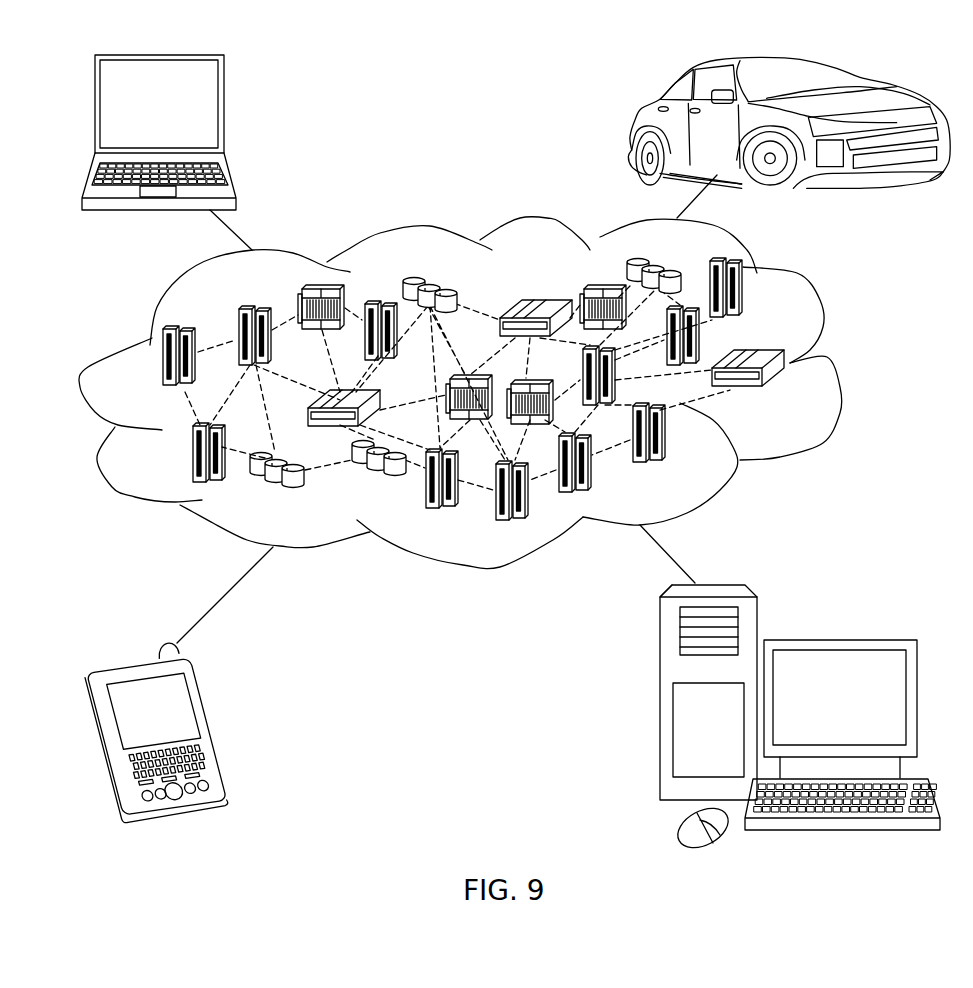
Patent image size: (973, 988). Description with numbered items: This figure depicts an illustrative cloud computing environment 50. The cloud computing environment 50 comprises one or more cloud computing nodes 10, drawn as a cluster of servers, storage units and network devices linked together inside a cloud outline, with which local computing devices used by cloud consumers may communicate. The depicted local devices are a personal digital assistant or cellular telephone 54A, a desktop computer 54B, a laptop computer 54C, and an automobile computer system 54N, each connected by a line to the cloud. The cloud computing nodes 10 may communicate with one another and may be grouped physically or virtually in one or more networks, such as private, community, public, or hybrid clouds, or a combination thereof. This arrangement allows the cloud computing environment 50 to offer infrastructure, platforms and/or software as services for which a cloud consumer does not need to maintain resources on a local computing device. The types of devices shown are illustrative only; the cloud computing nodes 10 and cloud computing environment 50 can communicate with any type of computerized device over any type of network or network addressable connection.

The laptop computer 54C is at (224, 111).
The automobile computer system 54N is at (628, 120).
The personal digital assistant (PDA) or cellular telephone 54A is at (215, 728).
The desktop computer 54B is at (838, 640).
The cloud computing environment 50 is at (838, 365).
The cloud computing nodes 10 is at (781, 394).